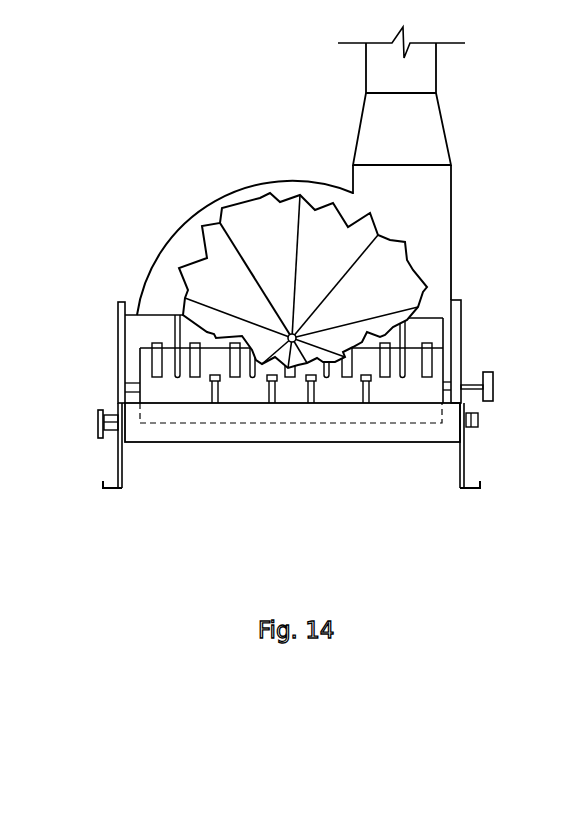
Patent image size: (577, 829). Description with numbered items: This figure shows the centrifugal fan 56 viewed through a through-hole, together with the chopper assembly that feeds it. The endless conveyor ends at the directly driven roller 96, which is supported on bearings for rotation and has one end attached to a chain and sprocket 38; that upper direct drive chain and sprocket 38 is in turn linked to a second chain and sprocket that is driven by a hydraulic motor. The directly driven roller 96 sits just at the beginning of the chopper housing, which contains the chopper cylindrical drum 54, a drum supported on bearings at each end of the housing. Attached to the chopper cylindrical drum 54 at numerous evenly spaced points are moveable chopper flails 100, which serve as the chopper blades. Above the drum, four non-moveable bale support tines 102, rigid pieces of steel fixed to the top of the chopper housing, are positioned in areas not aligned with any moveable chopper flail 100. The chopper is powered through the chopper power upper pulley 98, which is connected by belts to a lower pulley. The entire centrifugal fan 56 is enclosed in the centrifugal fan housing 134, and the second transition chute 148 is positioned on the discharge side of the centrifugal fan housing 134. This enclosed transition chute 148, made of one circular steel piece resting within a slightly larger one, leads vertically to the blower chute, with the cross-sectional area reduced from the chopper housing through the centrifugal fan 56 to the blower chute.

The second transition chute 148 is at (433, 128).
The centrifugal fan 56 is at (235, 245).
The centrifugal fan housing 134 is at (163, 273).
The bale support tines 102 is at (412, 335).
The chopper flails 100 is at (433, 363).
The chopper power upper pulley 98 is at (492, 401).
The chopper cylindrical drum 54 is at (390, 393).
The directly driven roller 96 is at (278, 443).
The chain and sprocket 38 is at (98, 433).